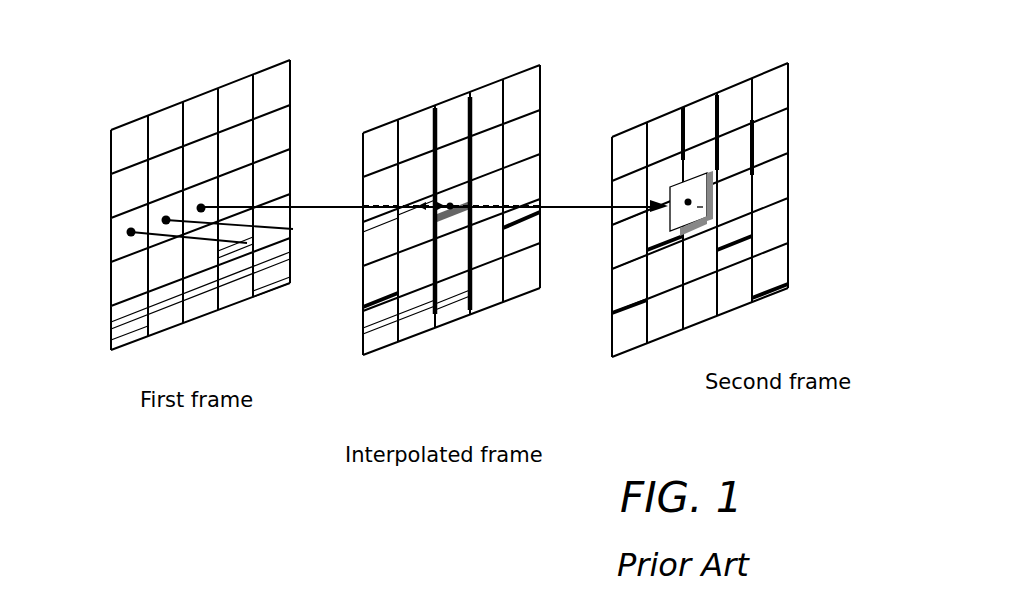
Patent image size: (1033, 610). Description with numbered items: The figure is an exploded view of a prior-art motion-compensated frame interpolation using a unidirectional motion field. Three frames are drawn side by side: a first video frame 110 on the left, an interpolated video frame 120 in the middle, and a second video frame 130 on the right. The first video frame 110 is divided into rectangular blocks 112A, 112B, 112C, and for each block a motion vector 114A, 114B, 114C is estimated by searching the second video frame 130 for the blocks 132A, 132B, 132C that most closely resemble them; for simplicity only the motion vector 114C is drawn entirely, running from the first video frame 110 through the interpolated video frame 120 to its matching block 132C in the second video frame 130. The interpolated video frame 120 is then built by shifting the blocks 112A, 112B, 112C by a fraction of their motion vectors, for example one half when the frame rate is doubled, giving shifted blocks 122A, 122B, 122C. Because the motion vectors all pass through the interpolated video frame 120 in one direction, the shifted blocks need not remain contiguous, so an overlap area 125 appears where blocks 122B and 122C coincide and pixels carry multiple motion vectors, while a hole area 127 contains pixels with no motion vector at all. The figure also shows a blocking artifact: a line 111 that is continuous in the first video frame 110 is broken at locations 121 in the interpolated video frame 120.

The first video frame 110 is at (160, 76).
The line 111 is at (133, 333).
The rectangular block 112A is at (127, 240).
The rectangular block 112B is at (162, 232).
The rectangular block 112C is at (210, 208).
The motion vector 114A is at (236, 248).
The motion vector 114B is at (272, 242).
The motion vector 114C is at (285, 228).
The interpolated video frame 120 is at (384, 94).
The locations 121 is at (406, 309).
The shifted block 122A is at (383, 234).
The shifted block 122B is at (415, 203).
The shifted block 122C is at (447, 214).
The overlap area 125 is at (432, 196).
The hole area 127 is at (472, 198).
The second video frame 130 is at (654, 86).
The block of second video frame 132A is at (630, 228).
The block of second video frame 132B is at (690, 262).
The block of second video frame 132C is at (716, 176).